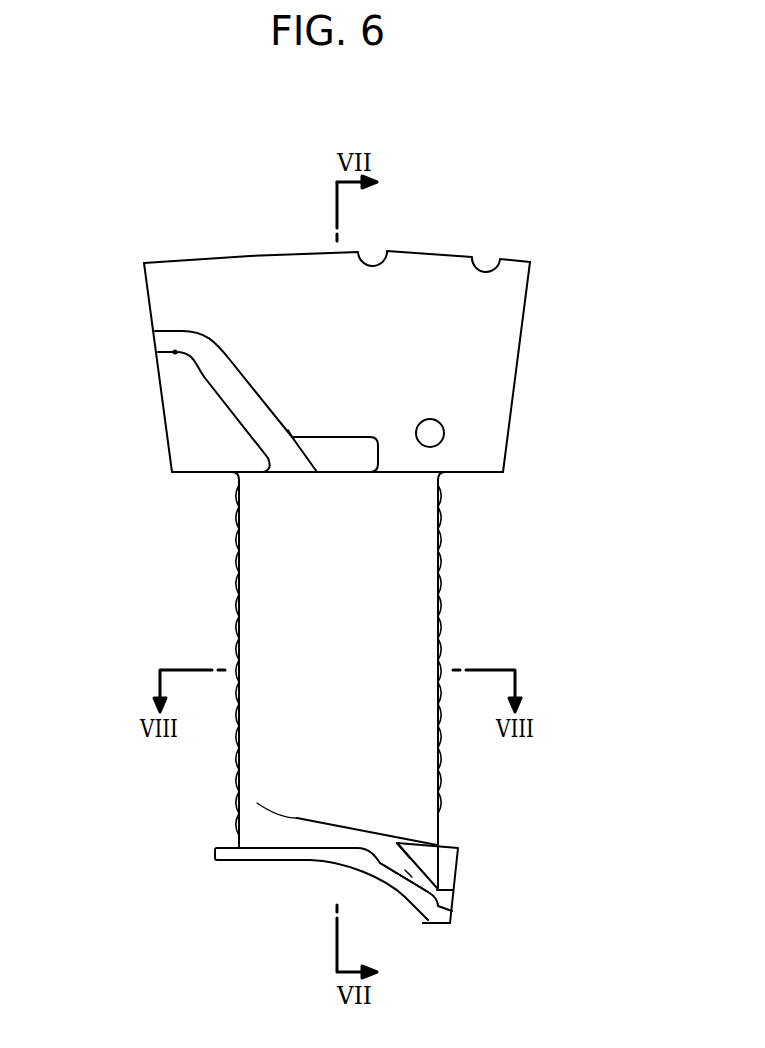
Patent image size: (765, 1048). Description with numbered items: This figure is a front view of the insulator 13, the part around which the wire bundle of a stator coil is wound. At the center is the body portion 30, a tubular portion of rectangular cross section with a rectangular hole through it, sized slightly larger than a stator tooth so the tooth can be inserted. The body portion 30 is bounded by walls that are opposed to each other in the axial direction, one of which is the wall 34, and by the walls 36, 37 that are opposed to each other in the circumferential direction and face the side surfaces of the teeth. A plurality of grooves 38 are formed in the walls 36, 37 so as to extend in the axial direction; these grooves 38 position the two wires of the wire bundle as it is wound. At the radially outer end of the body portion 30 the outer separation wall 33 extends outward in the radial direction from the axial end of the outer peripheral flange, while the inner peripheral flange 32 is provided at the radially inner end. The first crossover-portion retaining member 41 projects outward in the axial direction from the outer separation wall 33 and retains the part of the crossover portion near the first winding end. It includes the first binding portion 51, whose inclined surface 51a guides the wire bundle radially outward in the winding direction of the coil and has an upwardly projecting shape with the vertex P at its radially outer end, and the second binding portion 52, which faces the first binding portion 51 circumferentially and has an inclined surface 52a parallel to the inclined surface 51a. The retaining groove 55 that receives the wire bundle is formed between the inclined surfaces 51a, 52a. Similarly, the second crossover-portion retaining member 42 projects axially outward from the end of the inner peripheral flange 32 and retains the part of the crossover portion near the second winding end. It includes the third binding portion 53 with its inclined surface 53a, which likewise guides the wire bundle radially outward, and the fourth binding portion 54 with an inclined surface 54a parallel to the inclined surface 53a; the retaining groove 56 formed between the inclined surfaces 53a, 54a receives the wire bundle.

The insulator 13 is at (434, 229).
The body portion 30 is at (441, 502).
The inner peripheral flange 32 is at (268, 855).
The outer separation wall 33 is at (490, 323).
The wall 34 is at (290, 608).
The wall 36 is at (440, 588).
The wall 37 is at (239, 566).
The grooves 38 is at (438, 652).
The first crossover-portion retaining member 41 is at (282, 402).
The second crossover-portion retaining member 42 is at (452, 928).
The first binding portion 51 is at (200, 417).
The inclined surface 51a is at (235, 400).
The second binding portion 52 is at (360, 452).
The inclined surface 52a is at (302, 458).
The third binding portion 53 is at (360, 862).
The inclined surface 53a is at (433, 845).
The fourth binding portion 54 is at (447, 870).
The inclined surface 54a is at (407, 873).
The retaining groove 55 is at (268, 453).
The retaining groove 56 is at (405, 872).
The vertex P is at (172, 349).